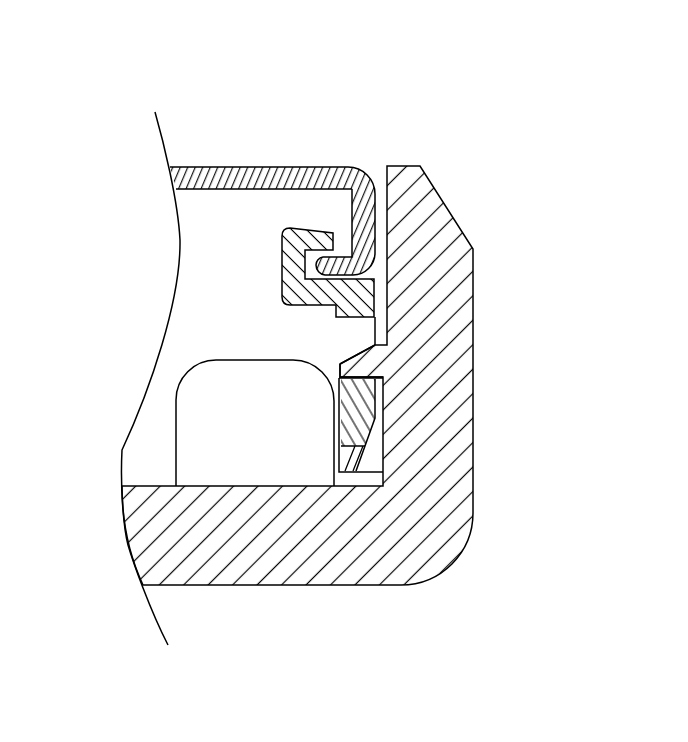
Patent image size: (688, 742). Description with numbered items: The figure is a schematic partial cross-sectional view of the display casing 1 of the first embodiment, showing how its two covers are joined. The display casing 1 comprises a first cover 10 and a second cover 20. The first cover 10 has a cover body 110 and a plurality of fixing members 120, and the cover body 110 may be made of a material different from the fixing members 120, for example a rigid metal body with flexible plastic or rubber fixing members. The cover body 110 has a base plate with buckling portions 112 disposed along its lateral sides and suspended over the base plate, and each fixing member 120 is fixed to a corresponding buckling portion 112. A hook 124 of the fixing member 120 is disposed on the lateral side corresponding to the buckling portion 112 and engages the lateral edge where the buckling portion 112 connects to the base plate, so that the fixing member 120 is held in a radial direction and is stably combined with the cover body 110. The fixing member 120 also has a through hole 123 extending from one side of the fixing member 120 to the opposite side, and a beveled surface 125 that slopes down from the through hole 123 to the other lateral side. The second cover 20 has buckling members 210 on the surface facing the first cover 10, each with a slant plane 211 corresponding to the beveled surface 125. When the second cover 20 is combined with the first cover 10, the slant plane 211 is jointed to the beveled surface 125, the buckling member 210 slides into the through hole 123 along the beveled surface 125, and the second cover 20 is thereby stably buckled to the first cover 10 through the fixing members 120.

The display casing 1 is at (100, 65).
The first cover 10 is at (219, 134).
The cover body 110 is at (287, 175).
The hook 124 is at (305, 233).
The fixing member 120 is at (265, 263).
The through hole 123 is at (350, 333).
The slant plane 211 is at (358, 362).
The buckling member 210 is at (340, 366).
The buckling portion 112 is at (334, 456).
The beveled surface 125 is at (358, 430).
The second cover 20 is at (489, 375).